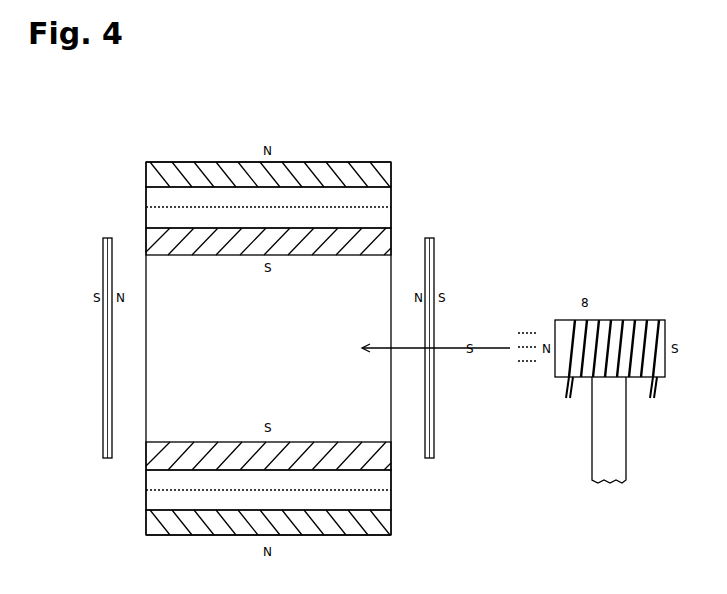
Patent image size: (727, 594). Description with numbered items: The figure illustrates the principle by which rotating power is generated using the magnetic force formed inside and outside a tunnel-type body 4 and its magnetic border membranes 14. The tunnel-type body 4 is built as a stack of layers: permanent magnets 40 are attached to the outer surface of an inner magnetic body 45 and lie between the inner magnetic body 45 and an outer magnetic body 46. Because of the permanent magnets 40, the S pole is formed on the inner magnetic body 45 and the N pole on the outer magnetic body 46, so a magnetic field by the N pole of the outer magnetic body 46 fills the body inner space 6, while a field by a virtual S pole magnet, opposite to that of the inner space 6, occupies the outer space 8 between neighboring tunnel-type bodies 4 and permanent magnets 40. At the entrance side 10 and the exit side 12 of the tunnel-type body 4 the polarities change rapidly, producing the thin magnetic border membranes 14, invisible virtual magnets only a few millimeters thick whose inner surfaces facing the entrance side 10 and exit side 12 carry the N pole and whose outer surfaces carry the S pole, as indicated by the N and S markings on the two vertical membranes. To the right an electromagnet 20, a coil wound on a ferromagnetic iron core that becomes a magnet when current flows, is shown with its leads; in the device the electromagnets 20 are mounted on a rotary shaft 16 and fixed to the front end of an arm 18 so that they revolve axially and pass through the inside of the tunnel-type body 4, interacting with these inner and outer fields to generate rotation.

The tunnel-type body 4 is at (308, 118).
The body inner space 6 is at (242, 351).
The outer space 8 is at (618, 346).
The entrance side 10 is at (406, 262).
The exit side 12 is at (128, 250).
The magnetic border membrane 14 is at (103, 255).
The rotary shaft 16 is at (52, 363).
The arm 18 is at (614, 462).
The electromagnet 20 is at (645, 320).
The permanent magnet 40 is at (372, 220).
The inner magnetic body 45 is at (316, 237).
The outer magnetic body 46 is at (222, 170).